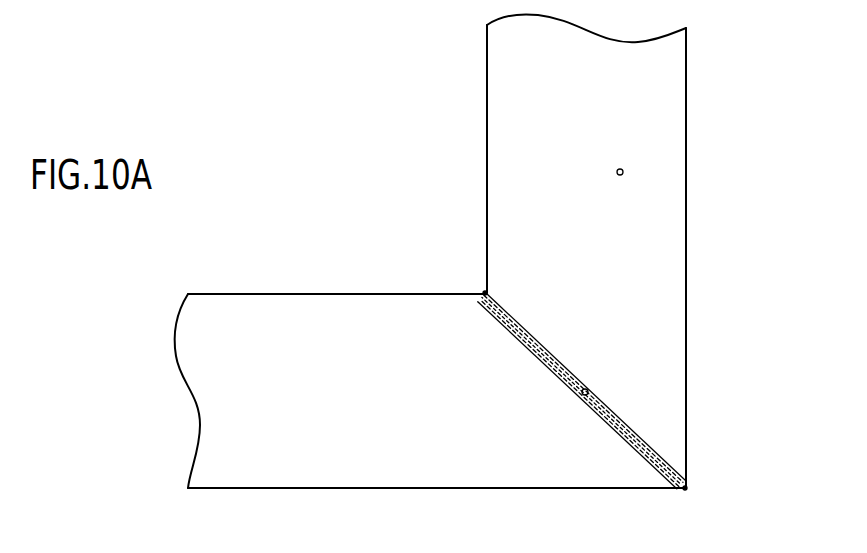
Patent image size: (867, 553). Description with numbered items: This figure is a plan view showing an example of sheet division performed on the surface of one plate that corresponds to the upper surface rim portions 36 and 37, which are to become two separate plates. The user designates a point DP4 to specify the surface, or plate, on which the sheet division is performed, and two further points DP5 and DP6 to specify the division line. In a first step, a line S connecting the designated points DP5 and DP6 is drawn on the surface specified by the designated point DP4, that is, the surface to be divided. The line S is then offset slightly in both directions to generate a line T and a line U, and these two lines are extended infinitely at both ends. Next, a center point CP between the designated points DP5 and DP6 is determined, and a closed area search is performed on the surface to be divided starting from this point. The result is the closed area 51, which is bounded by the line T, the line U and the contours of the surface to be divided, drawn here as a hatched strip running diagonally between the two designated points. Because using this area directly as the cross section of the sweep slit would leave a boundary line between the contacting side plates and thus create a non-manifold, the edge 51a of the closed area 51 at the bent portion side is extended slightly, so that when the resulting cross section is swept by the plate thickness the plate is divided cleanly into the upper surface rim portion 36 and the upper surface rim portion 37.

The upper surface rim portion 37 is at (503, 140).
The upper surface rim portion 36 is at (320, 305).
The closed area 51 is at (667, 461).
The edge of the closed area 51a is at (686, 478).
The designated point DP4 is at (623, 170).
The designated point DP5 is at (485, 293).
The designated point DP6 is at (687, 490).
The line S is at (527, 328).
The line T is at (552, 350).
The center point CP is at (586, 389).
The line U is at (538, 354).